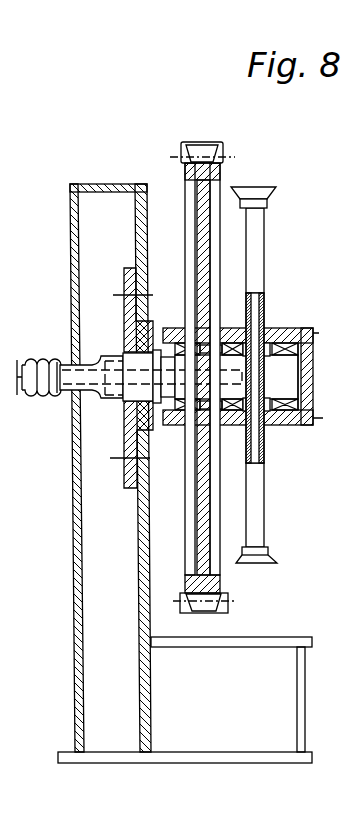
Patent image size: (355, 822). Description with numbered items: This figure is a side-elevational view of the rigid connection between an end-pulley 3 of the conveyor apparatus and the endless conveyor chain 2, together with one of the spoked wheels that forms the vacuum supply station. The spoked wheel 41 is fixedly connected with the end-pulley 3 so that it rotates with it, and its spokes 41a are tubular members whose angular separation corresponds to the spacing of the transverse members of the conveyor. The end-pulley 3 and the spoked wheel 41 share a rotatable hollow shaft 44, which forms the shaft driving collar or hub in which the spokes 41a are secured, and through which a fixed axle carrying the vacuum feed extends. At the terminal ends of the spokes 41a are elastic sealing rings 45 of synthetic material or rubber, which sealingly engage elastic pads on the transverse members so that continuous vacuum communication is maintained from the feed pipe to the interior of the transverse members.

The endless chain 2 is at (182, 141).
The end-pulley 3 is at (215, 548).
The spoked wheel 41 is at (265, 318).
The spokes 41a is at (262, 246).
The hollow shaft 44 is at (278, 428).
The sealing rings 45 is at (258, 188).